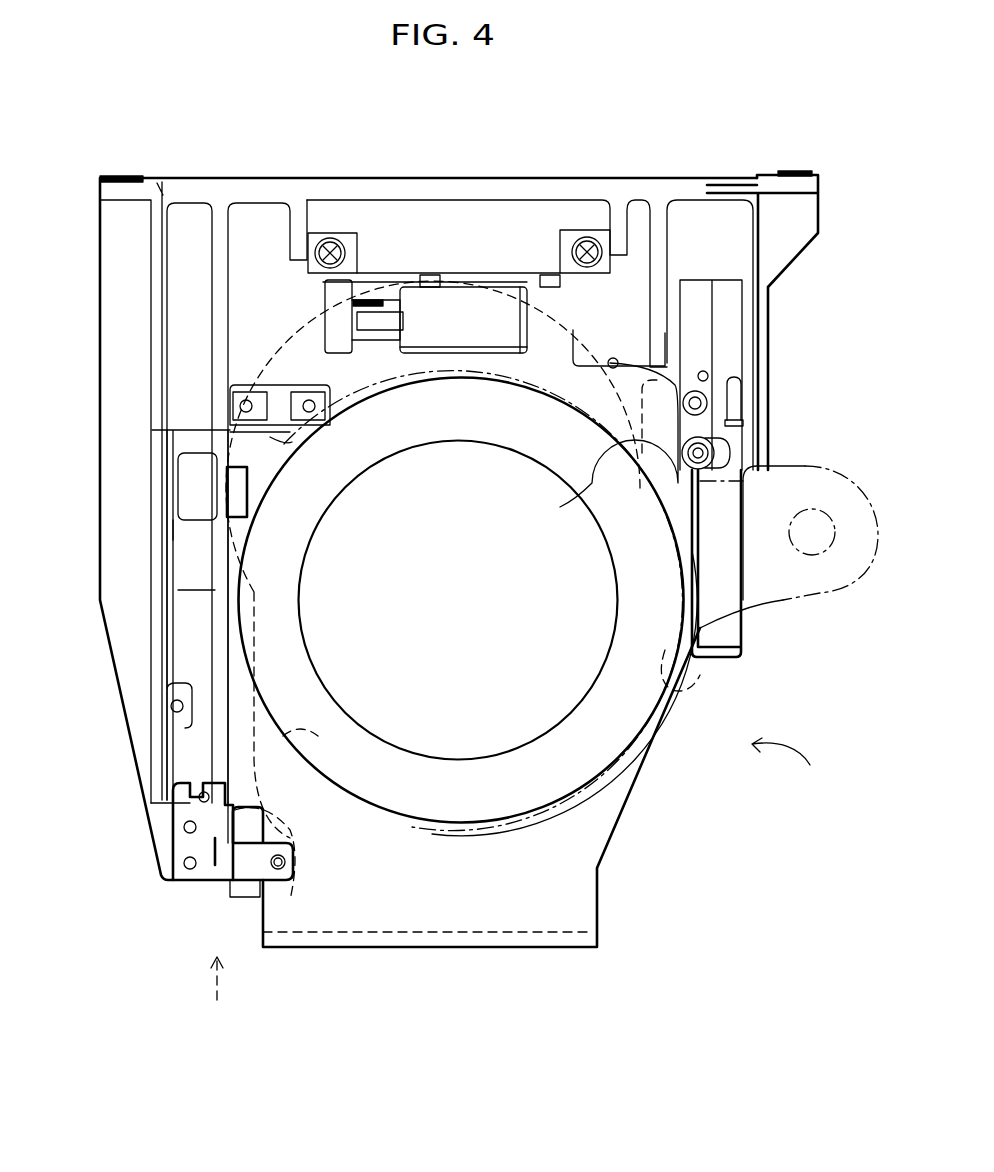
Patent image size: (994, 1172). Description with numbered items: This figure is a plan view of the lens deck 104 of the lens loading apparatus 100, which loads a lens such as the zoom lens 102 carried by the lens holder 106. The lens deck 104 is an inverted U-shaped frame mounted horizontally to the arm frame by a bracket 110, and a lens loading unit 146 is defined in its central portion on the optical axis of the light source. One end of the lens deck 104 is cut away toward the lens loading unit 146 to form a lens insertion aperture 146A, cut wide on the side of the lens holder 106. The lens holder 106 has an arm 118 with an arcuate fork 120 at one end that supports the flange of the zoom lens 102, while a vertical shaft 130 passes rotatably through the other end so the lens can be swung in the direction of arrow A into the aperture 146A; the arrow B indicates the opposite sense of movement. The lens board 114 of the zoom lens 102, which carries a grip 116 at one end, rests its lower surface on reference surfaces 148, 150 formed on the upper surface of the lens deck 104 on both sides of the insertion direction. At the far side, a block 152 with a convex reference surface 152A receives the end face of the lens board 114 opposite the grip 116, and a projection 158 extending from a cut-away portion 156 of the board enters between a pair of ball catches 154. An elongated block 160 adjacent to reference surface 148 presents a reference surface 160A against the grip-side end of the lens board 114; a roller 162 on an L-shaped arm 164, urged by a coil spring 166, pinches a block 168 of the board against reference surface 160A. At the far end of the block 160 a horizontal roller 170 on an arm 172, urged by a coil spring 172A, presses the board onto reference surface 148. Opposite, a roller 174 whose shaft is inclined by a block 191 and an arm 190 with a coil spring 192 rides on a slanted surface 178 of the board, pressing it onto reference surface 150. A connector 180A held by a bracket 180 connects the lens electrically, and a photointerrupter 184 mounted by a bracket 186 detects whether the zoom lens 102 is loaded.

The lens loading apparatus 100 is at (652, 1028).
The zoom lens 102 is at (632, 752).
The lens deck 104 is at (272, 217).
The lens holder 106 is at (835, 435).
The bracket 110 is at (157, 183).
The lens board 114 is at (600, 868).
The grip 116 is at (307, 947).
The arm 118 is at (783, 607).
The fork 120 is at (566, 812).
The shaft 130 is at (818, 510).
The lens loading unit 146 is at (461, 392).
The lens insertion aperture 146A is at (668, 688).
The reference surface 148 is at (283, 735).
The reference surface 150 is at (575, 476).
The block 152 is at (580, 330).
The reference surface 152A is at (613, 360).
The ball catches 154 is at (297, 398).
The cut-away portion 156 is at (290, 440).
The projection 158 is at (277, 393).
The block 160 is at (227, 663).
The reference surface 160A is at (177, 708).
The roller 162 is at (270, 887).
The arm 164 is at (200, 880).
The coil spring 166 is at (237, 897).
The block 168 is at (257, 833).
The roller 170 is at (247, 530).
The arm 172 is at (217, 500).
The coil spring 172A is at (173, 530).
The roller 174 is at (717, 452).
The slanted surface 178 is at (690, 597).
The bracket 180 is at (330, 281).
The connector 180A is at (357, 317).
The photointerrupter 184 is at (477, 300).
The bracket 186 is at (377, 272).
The arm 190 is at (727, 363).
The block 191 is at (702, 300).
The coil spring 192 is at (740, 420).
The arrow A is at (796, 770).
The direction B is at (217, 975).